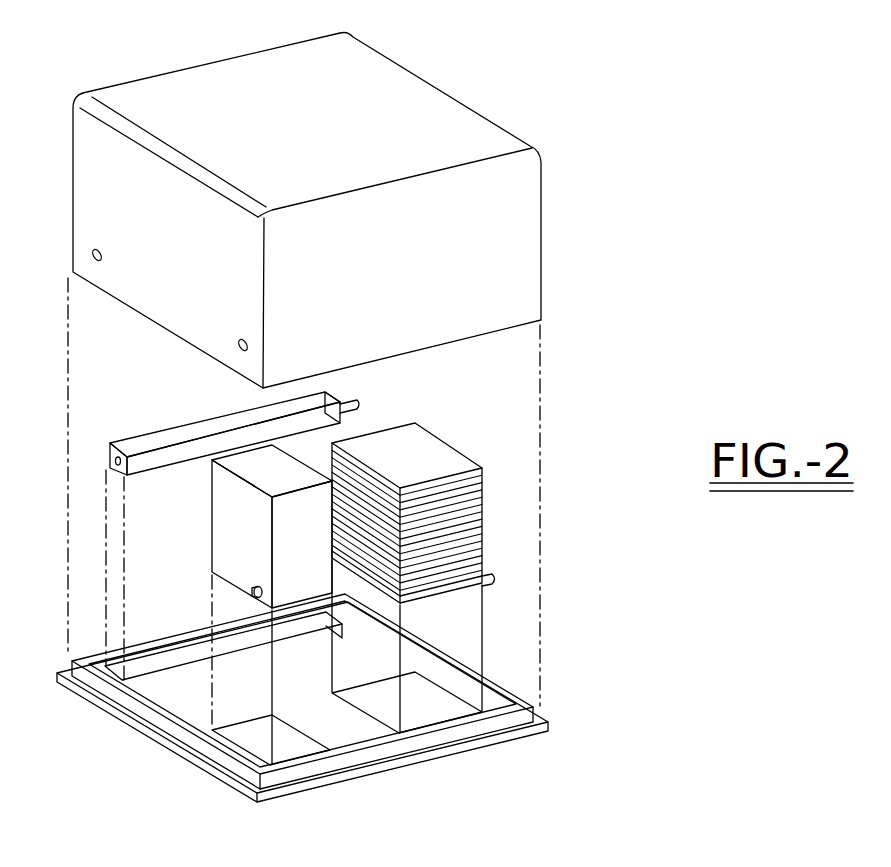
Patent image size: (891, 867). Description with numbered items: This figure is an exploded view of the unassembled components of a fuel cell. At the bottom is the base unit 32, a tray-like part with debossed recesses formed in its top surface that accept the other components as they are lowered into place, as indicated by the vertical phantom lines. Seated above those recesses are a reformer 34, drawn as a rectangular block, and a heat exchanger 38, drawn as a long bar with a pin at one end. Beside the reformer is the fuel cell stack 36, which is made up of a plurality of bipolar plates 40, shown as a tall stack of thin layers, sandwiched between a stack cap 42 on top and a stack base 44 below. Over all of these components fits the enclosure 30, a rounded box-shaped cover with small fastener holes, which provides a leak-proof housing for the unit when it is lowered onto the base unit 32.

The cover / lid 30 is at (397, 85).
The base 32 is at (395, 765).
The block / housing 34 is at (235, 520).
The stack assembly 36 is at (438, 543).
The bar 38 is at (203, 427).
The stack of plates 40 is at (488, 473).
The top plate 42 is at (433, 440).
The bottom plate 44 is at (432, 593).